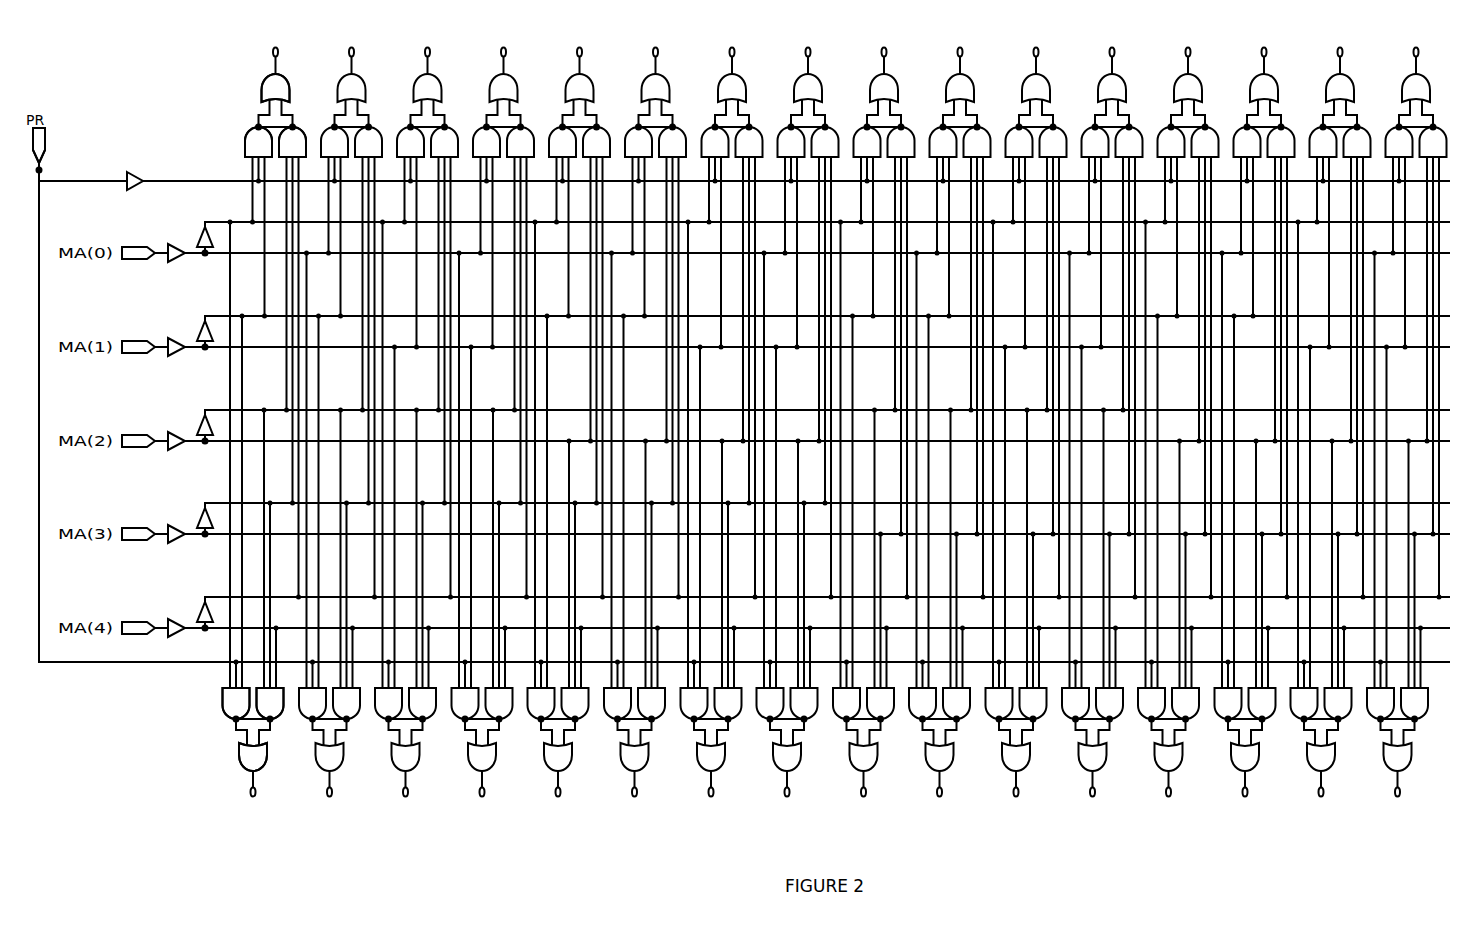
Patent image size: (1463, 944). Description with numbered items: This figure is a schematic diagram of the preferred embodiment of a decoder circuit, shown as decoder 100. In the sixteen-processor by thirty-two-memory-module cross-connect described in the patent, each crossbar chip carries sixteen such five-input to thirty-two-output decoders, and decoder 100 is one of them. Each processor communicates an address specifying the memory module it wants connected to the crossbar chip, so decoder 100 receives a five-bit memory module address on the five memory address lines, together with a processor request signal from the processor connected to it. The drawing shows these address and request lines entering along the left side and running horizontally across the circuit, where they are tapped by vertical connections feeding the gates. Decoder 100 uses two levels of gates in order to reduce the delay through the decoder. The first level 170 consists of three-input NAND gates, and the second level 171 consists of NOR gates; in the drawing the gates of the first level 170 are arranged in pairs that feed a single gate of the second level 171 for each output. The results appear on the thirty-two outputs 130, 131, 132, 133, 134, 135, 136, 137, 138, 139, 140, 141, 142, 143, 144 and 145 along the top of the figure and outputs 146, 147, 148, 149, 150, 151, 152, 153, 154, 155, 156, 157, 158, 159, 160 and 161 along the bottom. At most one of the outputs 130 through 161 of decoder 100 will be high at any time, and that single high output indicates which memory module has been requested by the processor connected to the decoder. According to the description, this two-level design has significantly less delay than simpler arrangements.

The decoder 100 is at (113, 79).
The output 130 is at (275, 304).
The output 131 is at (351, 304).
The output 132 is at (427, 304).
The output 133 is at (503, 304).
The output 134 is at (579, 304).
The output 135 is at (655, 304).
The output 136 is at (732, 304).
The output 137 is at (808, 304).
The output 138 is at (884, 304).
The output 139 is at (960, 304).
The output 140 is at (1036, 304).
The output 141 is at (1112, 304).
The output 142 is at (1188, 304).
The output 143 is at (1264, 304).
The output 144 is at (1340, 304).
The output 145 is at (1416, 304).
The output 146 is at (253, 529).
The output 147 is at (329, 545).
The output 148 is at (405, 529).
The output 149 is at (482, 545).
The output 150 is at (558, 529).
The output 151 is at (634, 545).
The output 152 is at (711, 529).
The output 153 is at (787, 545).
The output 154 is at (863, 529).
The output 155 is at (939, 545).
The output 156 is at (1016, 529).
The output 157 is at (1092, 545).
The output 158 is at (1168, 529).
The output 159 is at (1245, 545).
The output 160 is at (1321, 529).
The output 161 is at (1397, 545).
The first level 170 is at (233, 147).
The second level 171 is at (251, 93).